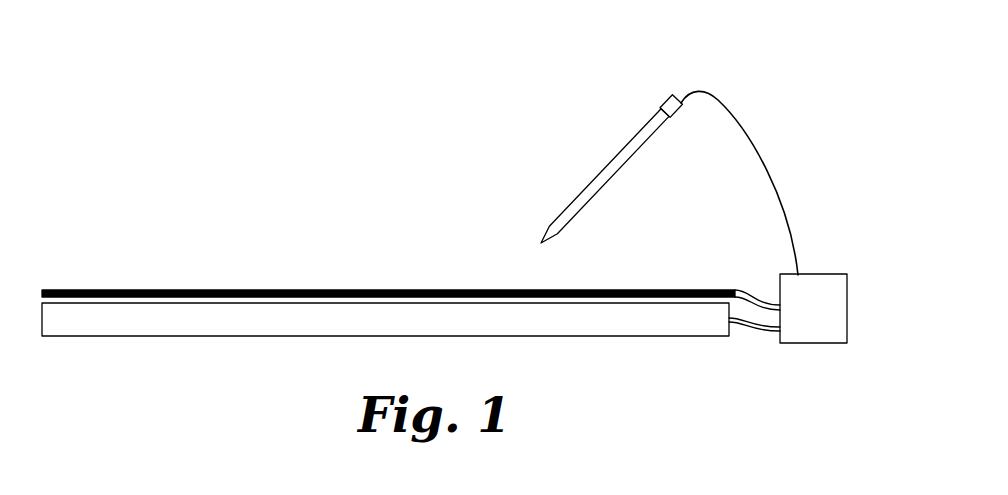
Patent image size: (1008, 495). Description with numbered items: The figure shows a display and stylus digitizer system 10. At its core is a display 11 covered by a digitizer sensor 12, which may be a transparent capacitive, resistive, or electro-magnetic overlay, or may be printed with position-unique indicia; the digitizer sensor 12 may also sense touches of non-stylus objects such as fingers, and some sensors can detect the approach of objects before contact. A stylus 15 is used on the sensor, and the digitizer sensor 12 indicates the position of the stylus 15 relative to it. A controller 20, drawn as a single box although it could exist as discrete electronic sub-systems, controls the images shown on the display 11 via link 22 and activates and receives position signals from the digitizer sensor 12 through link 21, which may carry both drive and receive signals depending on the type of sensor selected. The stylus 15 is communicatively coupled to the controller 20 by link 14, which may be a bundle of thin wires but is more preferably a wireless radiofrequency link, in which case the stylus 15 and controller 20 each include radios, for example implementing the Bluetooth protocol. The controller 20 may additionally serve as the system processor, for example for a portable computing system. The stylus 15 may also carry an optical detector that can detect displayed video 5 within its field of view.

The displayed video 5 is at (526, 258).
The display and stylus digitizer system 10 is at (198, 174).
The display 11 is at (175, 325).
The digitizer sensor 12 is at (178, 290).
The link 14 is at (767, 167).
The stylus 15 is at (602, 170).
The controller 20 is at (818, 288).
The link 21 is at (765, 306).
The link 22 is at (767, 332).